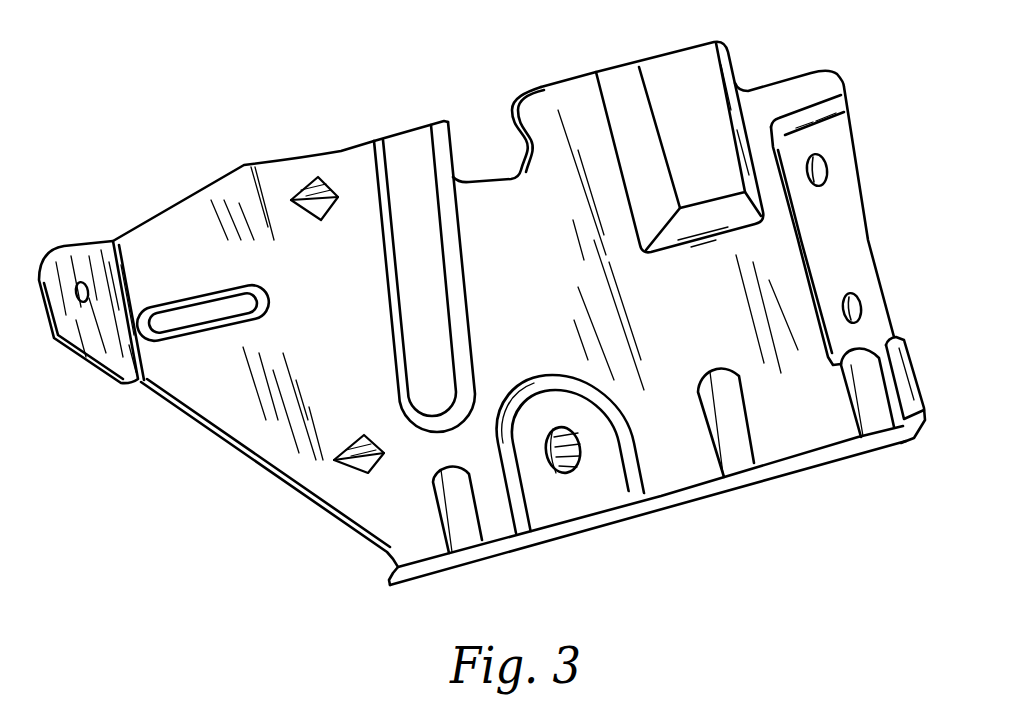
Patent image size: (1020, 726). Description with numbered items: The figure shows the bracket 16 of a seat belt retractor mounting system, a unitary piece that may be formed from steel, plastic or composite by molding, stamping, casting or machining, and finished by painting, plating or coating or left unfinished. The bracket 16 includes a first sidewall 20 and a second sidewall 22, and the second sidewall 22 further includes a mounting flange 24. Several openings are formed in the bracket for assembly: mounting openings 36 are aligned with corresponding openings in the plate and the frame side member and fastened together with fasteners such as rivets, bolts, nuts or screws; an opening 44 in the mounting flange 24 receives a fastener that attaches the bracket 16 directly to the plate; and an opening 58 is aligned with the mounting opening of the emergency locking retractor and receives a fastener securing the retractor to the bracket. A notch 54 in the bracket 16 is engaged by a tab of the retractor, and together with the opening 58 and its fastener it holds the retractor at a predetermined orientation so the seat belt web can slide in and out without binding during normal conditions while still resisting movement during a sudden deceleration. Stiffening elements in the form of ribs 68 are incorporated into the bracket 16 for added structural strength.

The bracket 16 is at (279, 119).
The first sidewall 20 is at (547, 279).
The second sidewall 22 is at (236, 403).
The mounting flange 24 is at (86, 339).
The mounting openings 36 is at (820, 172).
The opening 44 is at (80, 288).
The notch 54 is at (479, 147).
The opening 58 is at (566, 462).
The ribs 68 is at (217, 310).